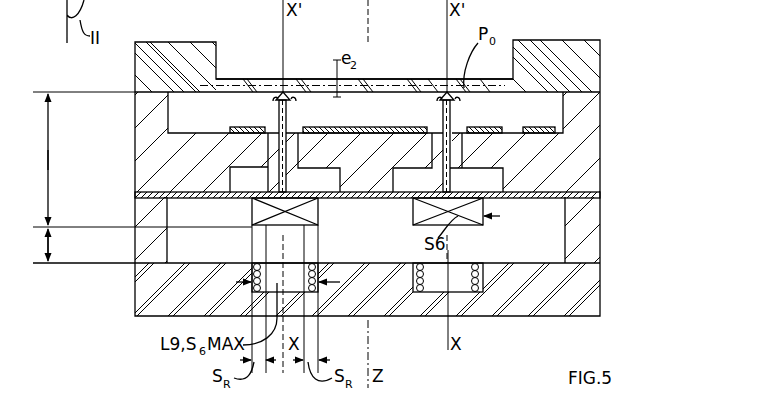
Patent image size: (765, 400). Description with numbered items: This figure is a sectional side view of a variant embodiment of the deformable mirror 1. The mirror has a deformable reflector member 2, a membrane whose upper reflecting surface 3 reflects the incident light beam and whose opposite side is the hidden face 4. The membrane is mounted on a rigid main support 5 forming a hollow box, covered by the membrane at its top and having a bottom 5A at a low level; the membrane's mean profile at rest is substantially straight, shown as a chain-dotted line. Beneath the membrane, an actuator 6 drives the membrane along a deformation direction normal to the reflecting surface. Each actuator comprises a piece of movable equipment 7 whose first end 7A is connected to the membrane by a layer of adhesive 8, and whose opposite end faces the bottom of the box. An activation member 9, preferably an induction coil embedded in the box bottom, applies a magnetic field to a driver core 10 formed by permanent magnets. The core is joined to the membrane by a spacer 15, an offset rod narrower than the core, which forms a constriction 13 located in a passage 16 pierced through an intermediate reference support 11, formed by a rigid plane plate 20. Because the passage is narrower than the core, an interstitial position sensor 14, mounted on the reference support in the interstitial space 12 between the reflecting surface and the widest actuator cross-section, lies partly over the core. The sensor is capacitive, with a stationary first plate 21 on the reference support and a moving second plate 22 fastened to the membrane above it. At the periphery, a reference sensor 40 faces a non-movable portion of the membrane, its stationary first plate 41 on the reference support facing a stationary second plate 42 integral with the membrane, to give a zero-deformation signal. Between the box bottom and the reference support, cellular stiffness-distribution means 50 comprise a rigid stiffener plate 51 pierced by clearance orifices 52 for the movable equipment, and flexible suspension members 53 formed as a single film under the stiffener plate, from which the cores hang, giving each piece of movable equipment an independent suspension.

The deformable mirror 1 is at (614, 68).
The deformable reflector member 2 is at (373, 80).
The reflecting surface 3 is at (388, 74).
The hidden face 4 is at (402, 99).
The main support 5 is at (546, 115).
The bottom of the box 5A is at (533, 300).
The actuator 6 is at (200, 263).
The piece of movable equipment 7 is at (273, 153).
The first end 7A is at (461, 102).
The layer of adhesive 8 is at (288, 95).
The activation member 9 is at (320, 291).
The driver core 10 is at (273, 180).
The intermediate reference support 11 is at (198, 153).
The interstitial space 12 is at (48, 168).
The constriction 13 is at (240, 135).
The interstitial position sensor 14 is at (247, 124).
The spacer 15 is at (276, 99).
The passage 16 is at (305, 124).
The plate 20 is at (515, 178).
The first plate 21 is at (247, 124).
The second plate 22 is at (229, 89).
The reference sensor 40 is at (560, 128).
The stationary first plate 41 is at (530, 145).
The stationary second plate 42 is at (537, 83).
The cellular stiffness-distribution means 50 is at (535, 205).
The stiffener plate 51 is at (363, 199).
The clearance orifices 52 is at (566, 240).
The flexible suspension members 53 is at (322, 199).